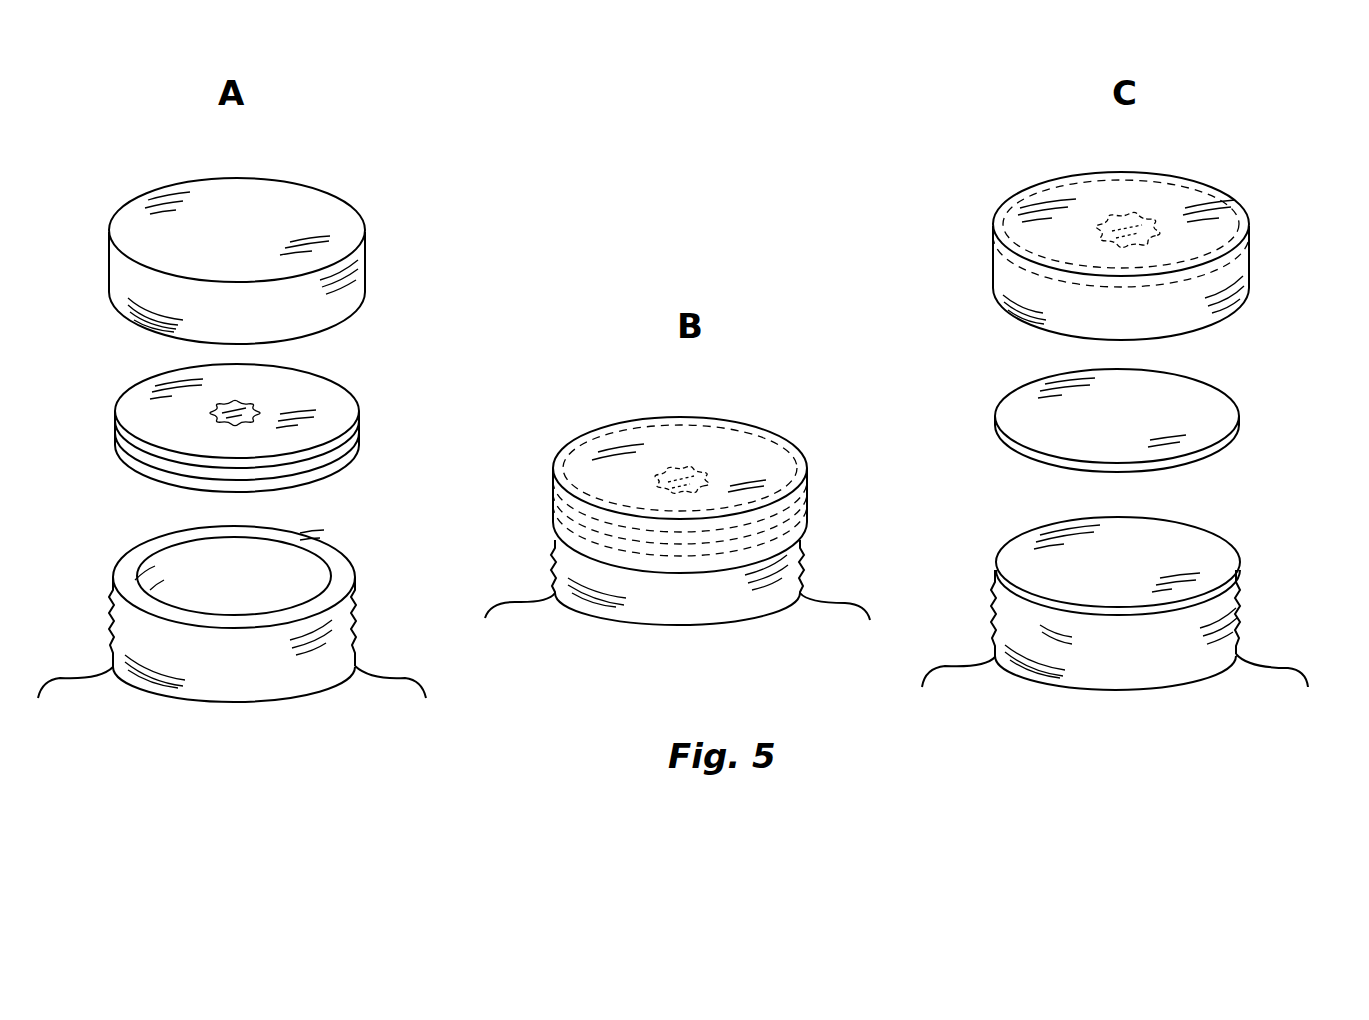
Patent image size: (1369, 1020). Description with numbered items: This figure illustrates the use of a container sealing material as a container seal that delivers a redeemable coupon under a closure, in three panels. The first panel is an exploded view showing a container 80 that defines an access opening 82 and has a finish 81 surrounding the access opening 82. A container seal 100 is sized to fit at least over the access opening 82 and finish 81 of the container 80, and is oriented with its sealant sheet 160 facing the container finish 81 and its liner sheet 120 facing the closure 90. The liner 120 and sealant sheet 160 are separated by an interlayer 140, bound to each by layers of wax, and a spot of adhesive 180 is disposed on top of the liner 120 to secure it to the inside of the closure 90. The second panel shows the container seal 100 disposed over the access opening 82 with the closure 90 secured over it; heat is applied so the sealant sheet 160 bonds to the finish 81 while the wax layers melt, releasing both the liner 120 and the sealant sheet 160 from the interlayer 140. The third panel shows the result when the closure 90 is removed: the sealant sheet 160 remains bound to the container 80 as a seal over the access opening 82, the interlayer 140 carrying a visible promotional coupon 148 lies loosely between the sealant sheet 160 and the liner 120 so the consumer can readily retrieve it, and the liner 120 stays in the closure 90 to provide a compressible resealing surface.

The container 80 is at (384, 654).
The finish 81 is at (335, 557).
The access opening 82 is at (143, 570).
The closure 90 is at (358, 212).
The container seal 100 is at (378, 392).
The liner sheet 120 is at (353, 427).
The interlayer 140 is at (348, 445).
The promotional coupon 148 is at (1197, 410).
The sealant sheet 160 is at (1237, 575).
The spot of adhesive 180 is at (253, 405).